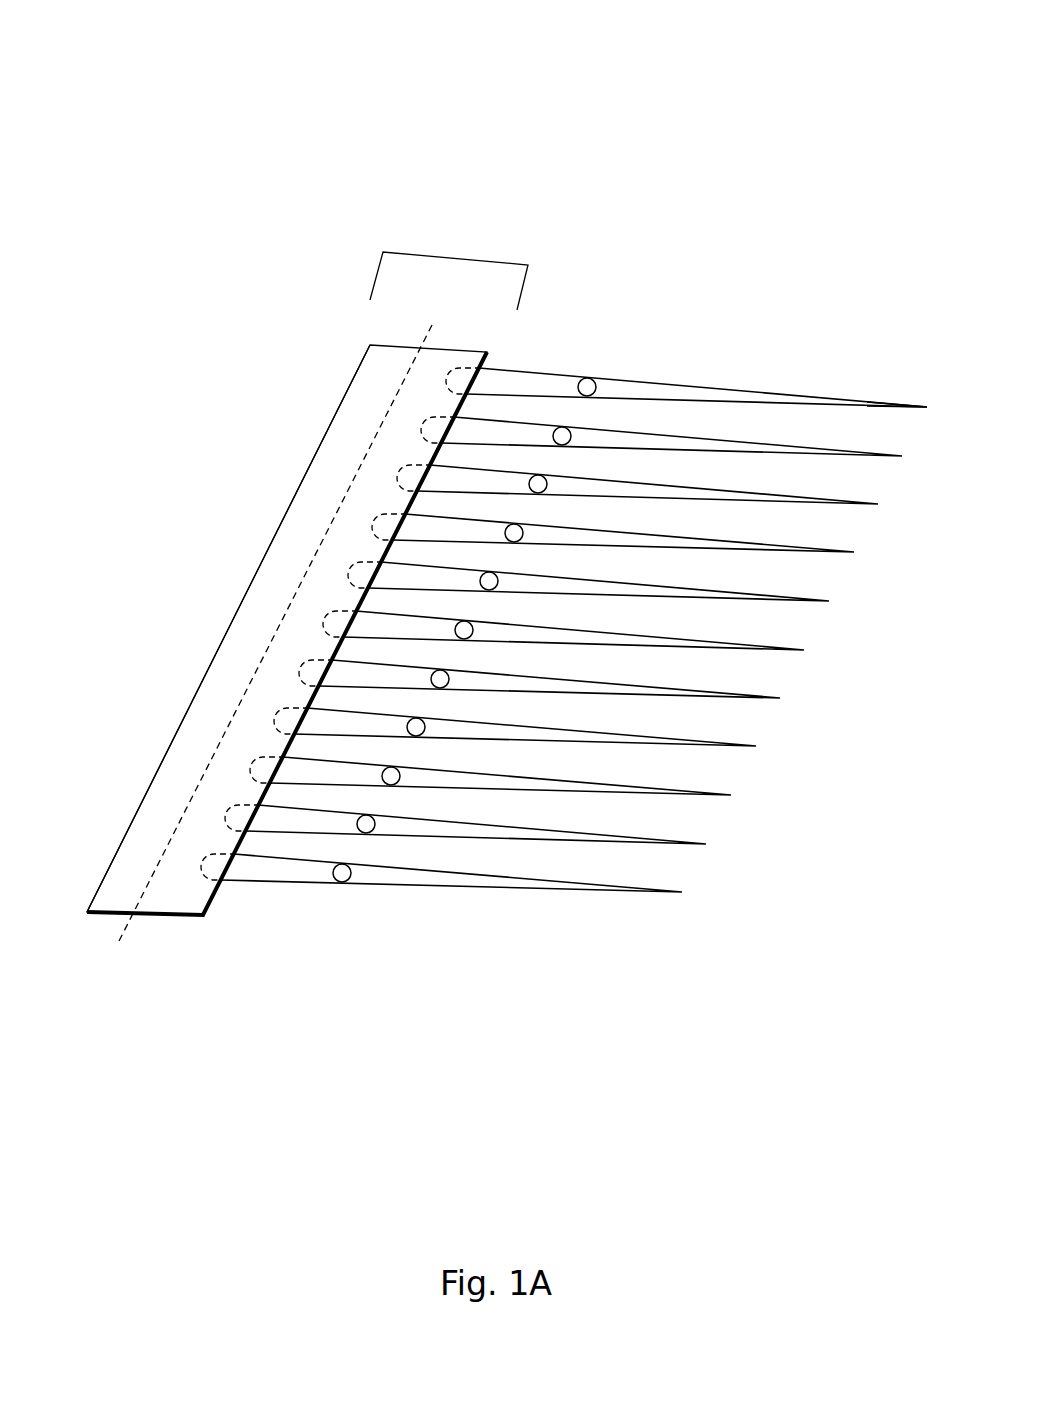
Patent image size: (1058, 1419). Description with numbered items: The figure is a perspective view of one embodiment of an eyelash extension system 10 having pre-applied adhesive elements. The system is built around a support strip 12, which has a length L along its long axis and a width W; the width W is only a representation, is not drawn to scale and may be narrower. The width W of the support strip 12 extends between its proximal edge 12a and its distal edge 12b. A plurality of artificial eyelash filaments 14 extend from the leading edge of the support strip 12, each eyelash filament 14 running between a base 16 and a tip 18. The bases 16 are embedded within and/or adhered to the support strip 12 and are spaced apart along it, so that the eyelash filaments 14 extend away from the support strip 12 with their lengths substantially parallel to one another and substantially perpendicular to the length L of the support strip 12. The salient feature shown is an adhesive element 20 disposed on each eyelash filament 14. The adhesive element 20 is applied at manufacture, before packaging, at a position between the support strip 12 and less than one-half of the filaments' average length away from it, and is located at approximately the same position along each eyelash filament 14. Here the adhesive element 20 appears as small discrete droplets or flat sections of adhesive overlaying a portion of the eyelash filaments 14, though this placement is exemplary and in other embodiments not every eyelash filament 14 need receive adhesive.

The lash extension system 10 is at (853, 48).
The support strip 12 is at (267, 679).
The proximal edge 12a is at (215, 898).
The distal edge 12b is at (138, 810).
The eyelash filaments 14 is at (750, 397).
The base 16 is at (463, 373).
The tip 18 is at (927, 407).
The adhesive element 20 is at (590, 378).
The width W is at (420, 252).
The length L is at (275, 635).